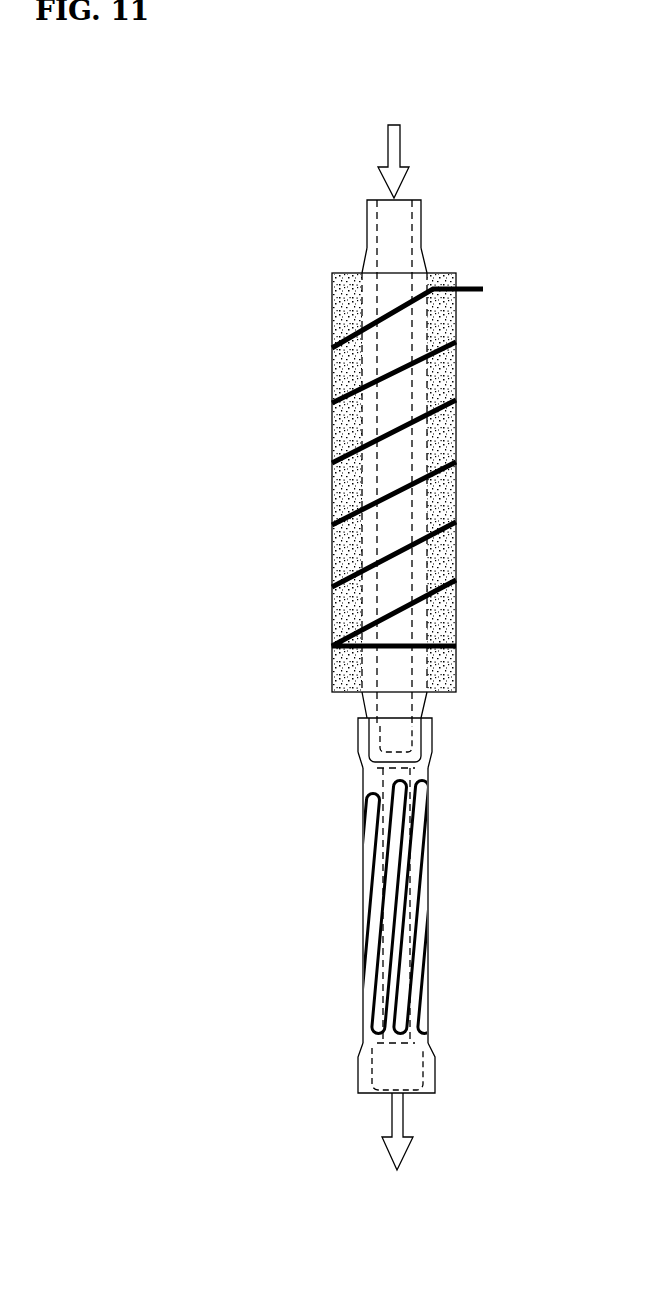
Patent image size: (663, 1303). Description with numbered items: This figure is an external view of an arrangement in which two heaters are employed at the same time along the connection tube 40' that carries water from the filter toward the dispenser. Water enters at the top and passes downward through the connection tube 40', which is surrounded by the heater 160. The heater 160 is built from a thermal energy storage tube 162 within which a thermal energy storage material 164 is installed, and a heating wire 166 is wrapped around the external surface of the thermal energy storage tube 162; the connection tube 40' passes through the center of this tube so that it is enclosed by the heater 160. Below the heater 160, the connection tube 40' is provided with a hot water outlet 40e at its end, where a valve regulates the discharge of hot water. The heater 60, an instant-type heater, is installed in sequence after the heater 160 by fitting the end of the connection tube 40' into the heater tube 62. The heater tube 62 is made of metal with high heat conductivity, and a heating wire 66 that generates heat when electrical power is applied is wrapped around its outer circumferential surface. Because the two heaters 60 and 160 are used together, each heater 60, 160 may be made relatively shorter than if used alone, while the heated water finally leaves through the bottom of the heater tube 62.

The connection tube 40' is at (450, 481).
The heater 160 is at (511, 349).
The thermal energy storage tube 162 is at (456, 498).
The thermal energy storage material 164 is at (456, 436).
The heating wire 166 is at (456, 580).
The hot water outlet 40e is at (432, 738).
The heater 60 is at (331, 881).
The heater tube 62 is at (429, 955).
The heating wire 66 is at (428, 855).